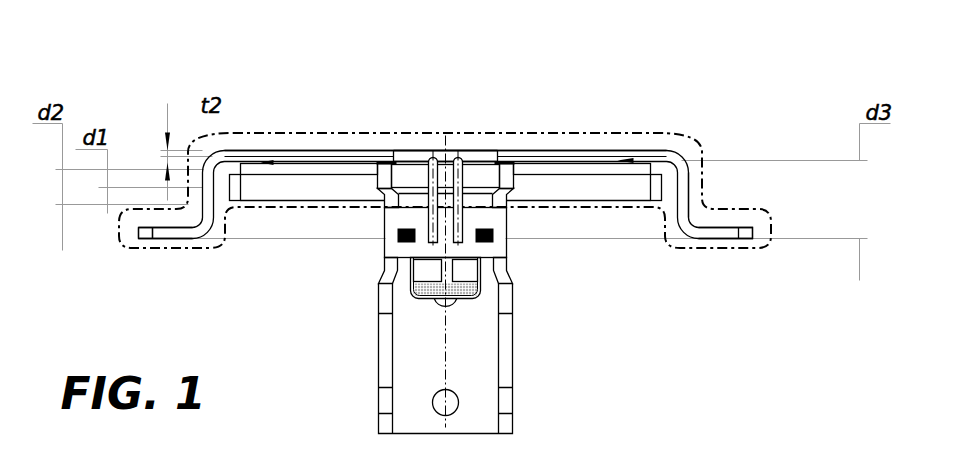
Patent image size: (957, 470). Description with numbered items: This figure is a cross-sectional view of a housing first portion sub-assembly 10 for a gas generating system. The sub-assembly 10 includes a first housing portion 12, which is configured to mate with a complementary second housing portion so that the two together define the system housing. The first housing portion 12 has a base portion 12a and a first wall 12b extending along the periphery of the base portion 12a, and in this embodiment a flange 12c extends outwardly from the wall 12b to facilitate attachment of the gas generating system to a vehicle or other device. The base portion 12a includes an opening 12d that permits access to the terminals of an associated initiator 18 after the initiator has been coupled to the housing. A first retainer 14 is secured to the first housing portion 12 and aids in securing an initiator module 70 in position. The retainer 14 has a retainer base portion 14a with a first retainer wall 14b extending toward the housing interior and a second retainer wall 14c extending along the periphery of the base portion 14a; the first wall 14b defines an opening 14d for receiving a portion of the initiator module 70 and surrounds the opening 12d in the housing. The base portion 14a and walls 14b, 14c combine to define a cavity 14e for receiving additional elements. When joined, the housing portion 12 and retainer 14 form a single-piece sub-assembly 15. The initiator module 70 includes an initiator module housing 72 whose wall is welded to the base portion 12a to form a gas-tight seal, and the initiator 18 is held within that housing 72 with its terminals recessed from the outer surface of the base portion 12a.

The housing first portion sub-assembly 10 is at (437, 235).
The first housing portion 12 is at (605, 145).
The base portion 12a is at (550, 150).
The first wall 12b is at (690, 195).
The flange 12c is at (718, 228).
The opening 12d is at (478, 152).
The first retainer 14 is at (467, 183).
The retainer base portion 14a is at (330, 157).
The first retainer wall 14b is at (378, 176).
The second retainer wall 14c is at (660, 170).
The opening 14d is at (415, 170).
The cavity 14e is at (540, 188).
The single-piece housing portion sub-assembly 15 is at (143, 243).
The initiator 18 is at (472, 298).
The initiator module 70 is at (378, 333).
The initiator module housing 72 is at (458, 345).